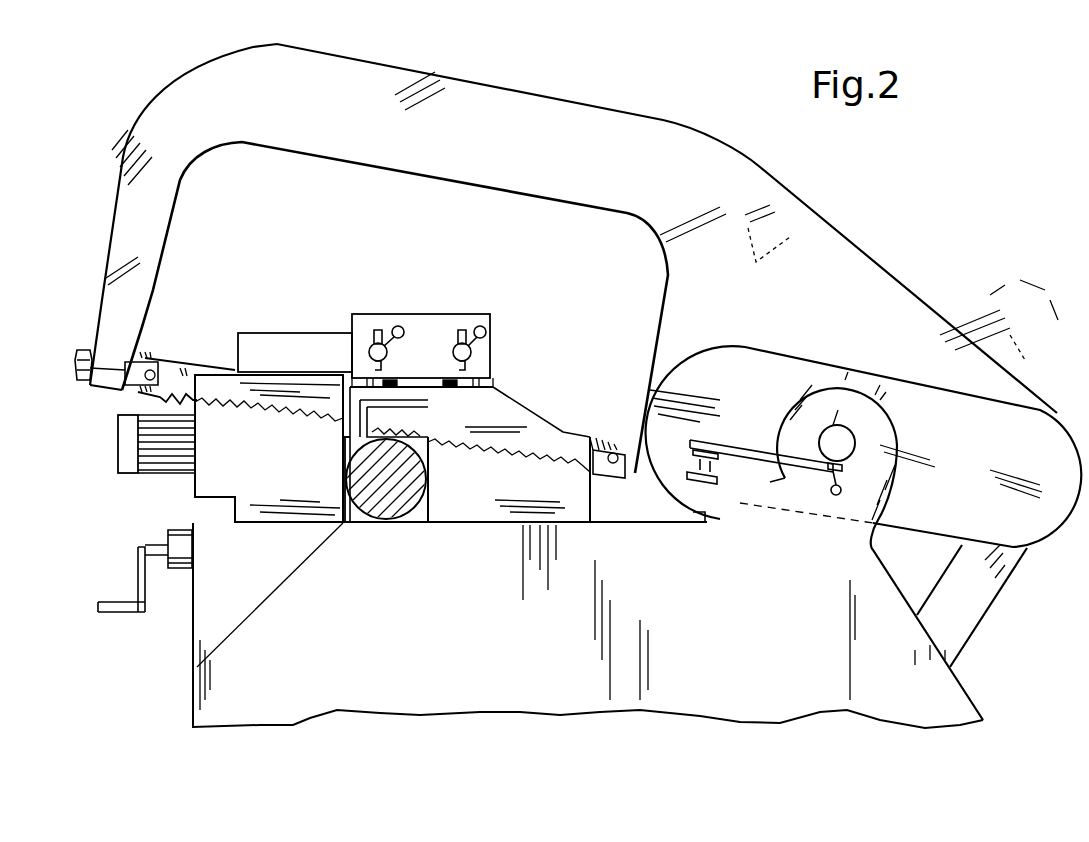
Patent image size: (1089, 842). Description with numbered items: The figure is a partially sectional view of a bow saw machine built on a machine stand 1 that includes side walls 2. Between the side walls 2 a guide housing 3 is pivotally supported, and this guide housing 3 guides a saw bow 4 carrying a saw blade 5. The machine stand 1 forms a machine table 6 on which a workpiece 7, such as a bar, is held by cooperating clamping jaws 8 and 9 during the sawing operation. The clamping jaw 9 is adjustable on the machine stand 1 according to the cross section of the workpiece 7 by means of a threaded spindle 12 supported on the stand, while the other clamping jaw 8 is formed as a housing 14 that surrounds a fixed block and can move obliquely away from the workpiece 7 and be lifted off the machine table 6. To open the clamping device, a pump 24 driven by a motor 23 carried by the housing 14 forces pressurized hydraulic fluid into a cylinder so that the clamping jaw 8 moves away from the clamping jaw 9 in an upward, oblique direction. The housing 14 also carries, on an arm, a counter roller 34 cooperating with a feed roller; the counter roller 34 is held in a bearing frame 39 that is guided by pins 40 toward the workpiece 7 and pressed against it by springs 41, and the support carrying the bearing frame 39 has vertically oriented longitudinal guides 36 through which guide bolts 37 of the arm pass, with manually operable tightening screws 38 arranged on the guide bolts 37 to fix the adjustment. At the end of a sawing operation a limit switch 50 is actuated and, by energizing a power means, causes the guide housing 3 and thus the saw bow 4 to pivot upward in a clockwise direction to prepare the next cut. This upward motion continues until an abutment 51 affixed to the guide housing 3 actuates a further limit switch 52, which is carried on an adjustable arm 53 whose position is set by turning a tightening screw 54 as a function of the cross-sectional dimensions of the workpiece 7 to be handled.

The machine stand 1 is at (488, 668).
The side walls 2 is at (877, 415).
The guide housing 3 is at (1042, 440).
The saw bow 4 is at (658, 130).
The saw blade 5 is at (170, 365).
The machine table 6 is at (350, 518).
The workpiece 7 is at (398, 520).
The clamping jaw 8 is at (342, 457).
The clamping jaw 9 is at (425, 520).
The threaded spindle 12 is at (158, 545).
The housing 14 is at (253, 357).
The motor 23 is at (148, 435).
The pump 24 is at (123, 450).
The counter roller 34 is at (352, 413).
The longitudinal guides 36 is at (370, 355).
The guide bolts 37 is at (372, 333).
The tightening screws 38 is at (445, 337).
The bearing frame 39 is at (417, 390).
The pins 40 is at (472, 388).
The springs 41 is at (457, 388).
The limit switch 50 is at (693, 510).
The abutment 51 is at (712, 484).
The further limit switch 52 is at (693, 453).
The adjustable arm 53 is at (760, 455).
The tightening screw 54 is at (823, 470).